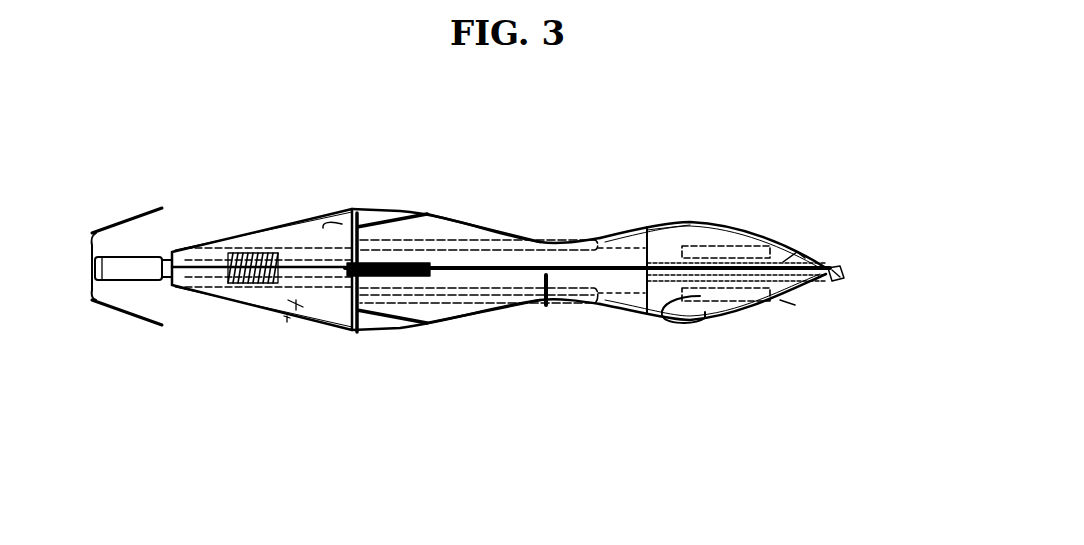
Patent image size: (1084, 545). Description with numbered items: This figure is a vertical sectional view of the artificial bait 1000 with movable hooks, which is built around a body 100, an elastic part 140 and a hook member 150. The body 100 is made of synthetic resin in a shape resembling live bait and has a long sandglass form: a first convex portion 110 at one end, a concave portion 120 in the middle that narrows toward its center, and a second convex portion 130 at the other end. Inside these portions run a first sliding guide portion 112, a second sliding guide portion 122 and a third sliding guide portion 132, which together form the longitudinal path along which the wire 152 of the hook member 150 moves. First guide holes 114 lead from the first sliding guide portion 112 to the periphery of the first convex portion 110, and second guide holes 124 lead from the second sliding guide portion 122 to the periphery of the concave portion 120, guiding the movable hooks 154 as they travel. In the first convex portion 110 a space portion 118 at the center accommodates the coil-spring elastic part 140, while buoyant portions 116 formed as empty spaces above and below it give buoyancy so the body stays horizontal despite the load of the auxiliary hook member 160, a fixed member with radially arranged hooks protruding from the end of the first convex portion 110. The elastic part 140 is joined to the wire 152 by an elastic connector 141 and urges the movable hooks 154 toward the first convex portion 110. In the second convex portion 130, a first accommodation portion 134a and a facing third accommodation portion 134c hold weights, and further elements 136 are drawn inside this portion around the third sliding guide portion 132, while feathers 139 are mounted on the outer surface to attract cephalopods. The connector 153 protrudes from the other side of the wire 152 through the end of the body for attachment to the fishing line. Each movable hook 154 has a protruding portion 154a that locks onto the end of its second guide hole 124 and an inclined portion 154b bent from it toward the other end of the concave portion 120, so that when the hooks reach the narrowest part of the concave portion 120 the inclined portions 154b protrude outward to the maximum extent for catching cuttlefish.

The artificial bait 1000 is at (172, 89).
The body 100 is at (511, 176).
The first convex portion 110 is at (383, 208).
The first sliding guide portion 112 is at (447, 248).
The first guide holes 114 is at (428, 215).
The buoyant portions 116 is at (327, 218).
The space portion 118 is at (303, 252).
The concave portion 120 is at (593, 238).
The second sliding guide portion 122 is at (557, 238).
The second guide holes 124 is at (577, 238).
The second convex portion 130 is at (722, 223).
The third sliding guide portion 132 is at (702, 257).
The first accommodation portion 134a is at (790, 253).
The third accommodation portion 134c is at (793, 298).
The electrode 136 is at (747, 252).
The feathers 139 is at (680, 323).
The elastic part 140 is at (243, 252).
The elastic connector 141 is at (288, 302).
The hook member 150 is at (547, 305).
The wire 152 is at (497, 275).
The connector 153 is at (844, 278).
The movable hooks 154 is at (478, 440).
The protruding portion 154a is at (333, 330).
The inclined portion 154b is at (400, 333).
The auxiliary hook member 160 is at (127, 212).